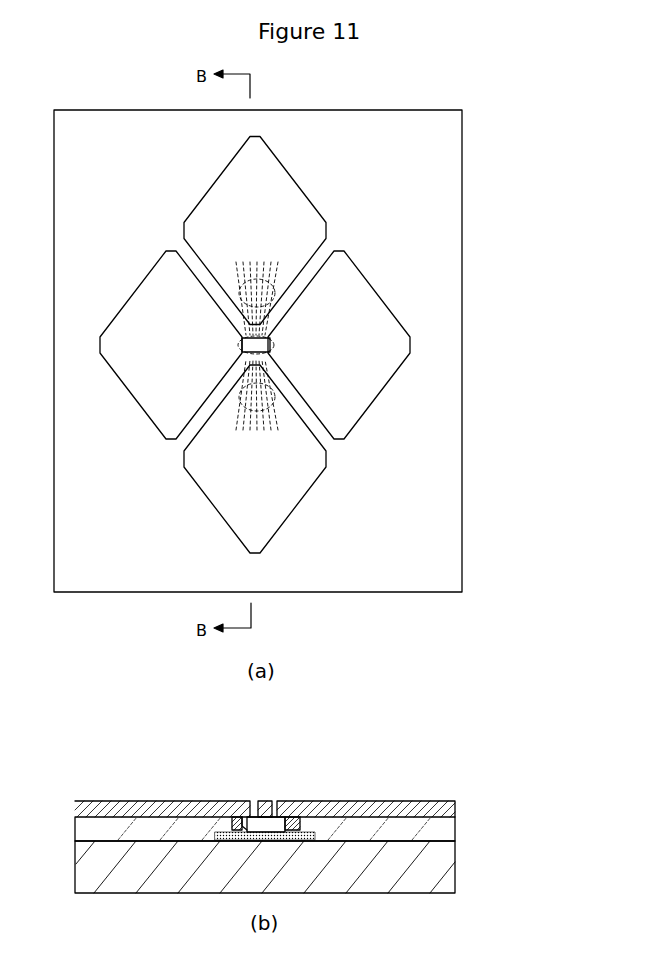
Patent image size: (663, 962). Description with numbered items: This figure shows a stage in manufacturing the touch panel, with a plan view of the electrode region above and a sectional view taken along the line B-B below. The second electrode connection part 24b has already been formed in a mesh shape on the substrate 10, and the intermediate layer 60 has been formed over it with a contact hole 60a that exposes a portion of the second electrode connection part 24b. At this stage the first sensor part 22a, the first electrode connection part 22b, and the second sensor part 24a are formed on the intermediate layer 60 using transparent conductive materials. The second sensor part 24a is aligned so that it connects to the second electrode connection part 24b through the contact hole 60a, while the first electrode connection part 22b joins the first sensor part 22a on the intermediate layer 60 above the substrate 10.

The substrate 10 is at (455, 177).
The intermediate layer 60 is at (112, 156).
The contact hole 60a is at (283, 268).
The second sensor part 24a is at (297, 180).
The second electrode connection part 24b is at (223, 322).
The first sensor part 22a is at (383, 321).
The first electrode connection part 22b is at (272, 345).